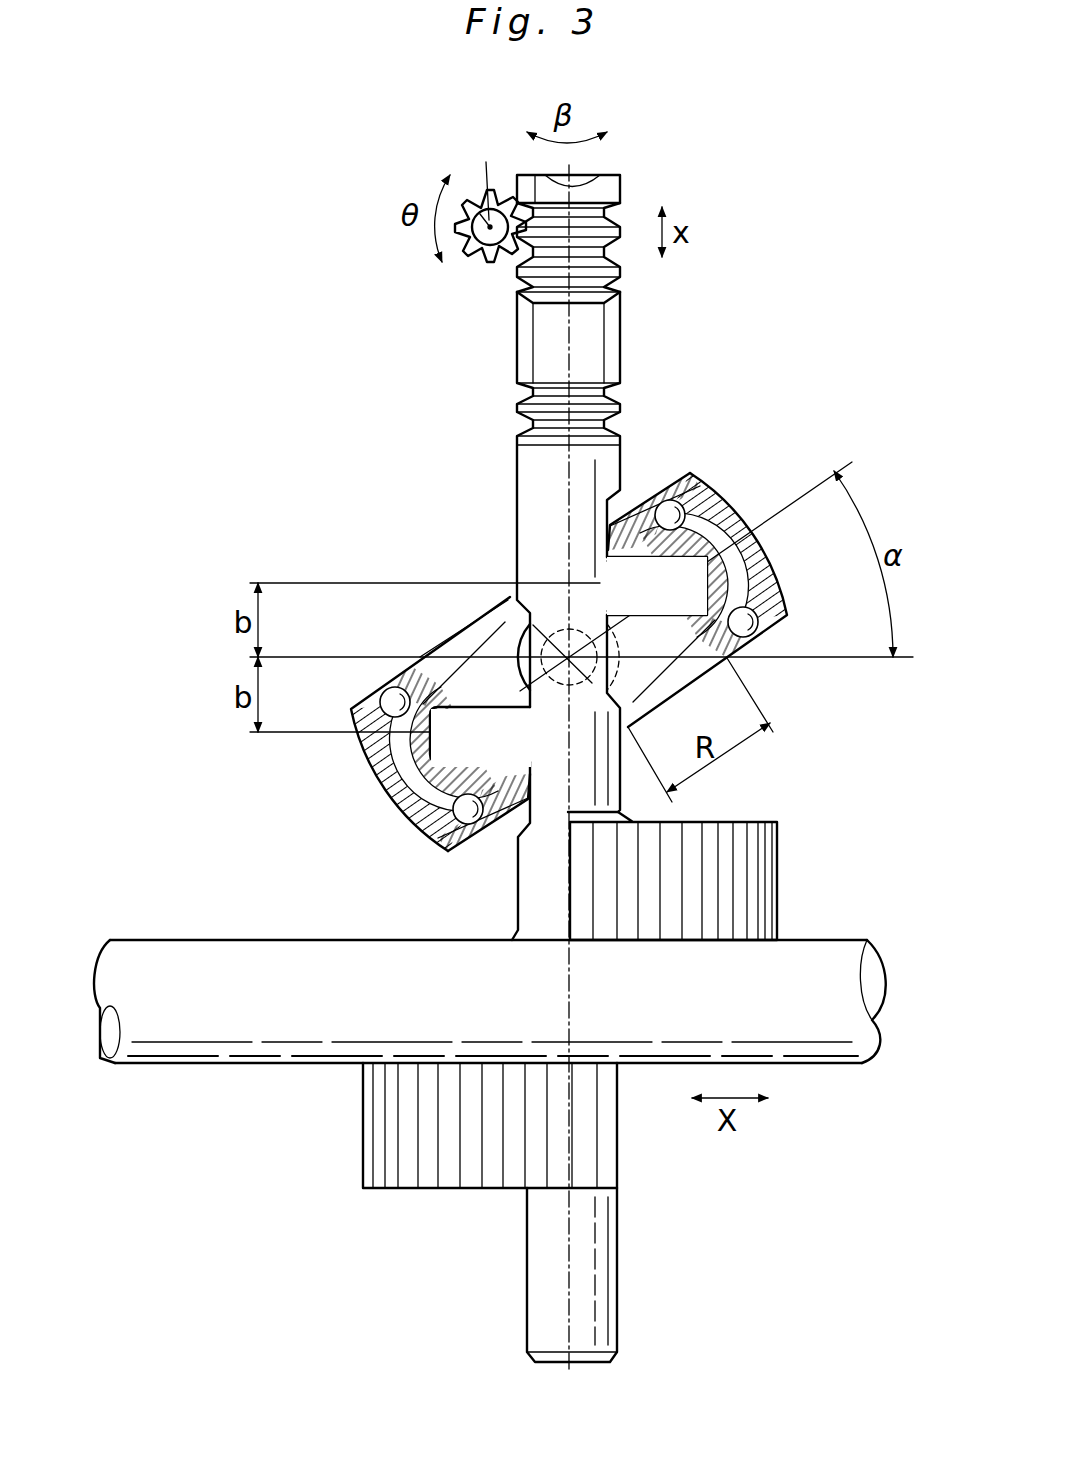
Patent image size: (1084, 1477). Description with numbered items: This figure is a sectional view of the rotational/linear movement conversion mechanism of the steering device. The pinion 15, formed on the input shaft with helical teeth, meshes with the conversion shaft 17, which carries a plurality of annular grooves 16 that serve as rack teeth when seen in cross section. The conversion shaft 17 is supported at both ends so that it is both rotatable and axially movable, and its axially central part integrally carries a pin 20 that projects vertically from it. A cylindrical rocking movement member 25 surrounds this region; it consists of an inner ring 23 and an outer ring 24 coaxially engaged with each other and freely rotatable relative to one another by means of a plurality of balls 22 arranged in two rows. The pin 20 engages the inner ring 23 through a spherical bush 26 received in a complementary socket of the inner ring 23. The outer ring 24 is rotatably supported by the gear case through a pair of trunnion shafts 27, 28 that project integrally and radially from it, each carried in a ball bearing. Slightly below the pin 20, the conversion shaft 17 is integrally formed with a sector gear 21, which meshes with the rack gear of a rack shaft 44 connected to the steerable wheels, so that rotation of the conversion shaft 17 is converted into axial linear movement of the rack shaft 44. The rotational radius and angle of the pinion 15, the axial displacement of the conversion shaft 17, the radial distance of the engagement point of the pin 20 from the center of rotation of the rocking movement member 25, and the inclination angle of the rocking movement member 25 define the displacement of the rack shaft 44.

The pinion 15 is at (490, 250).
The annular grooves 16 is at (618, 264).
The conversion shaft 17 is at (520, 470).
The pin 20 is at (677, 567).
The sector gear 21 is at (777, 905).
The balls 22 is at (395, 707).
The inner ring 23 is at (503, 837).
The outer ring 24 is at (441, 842).
The rocking movement member 25 is at (423, 893).
The spherical bush 26 is at (477, 690).
The trunnion shaft 27 is at (550, 607).
The trunnion shaft 28 is at (479, 658).
The rack shaft 44 is at (840, 1068).